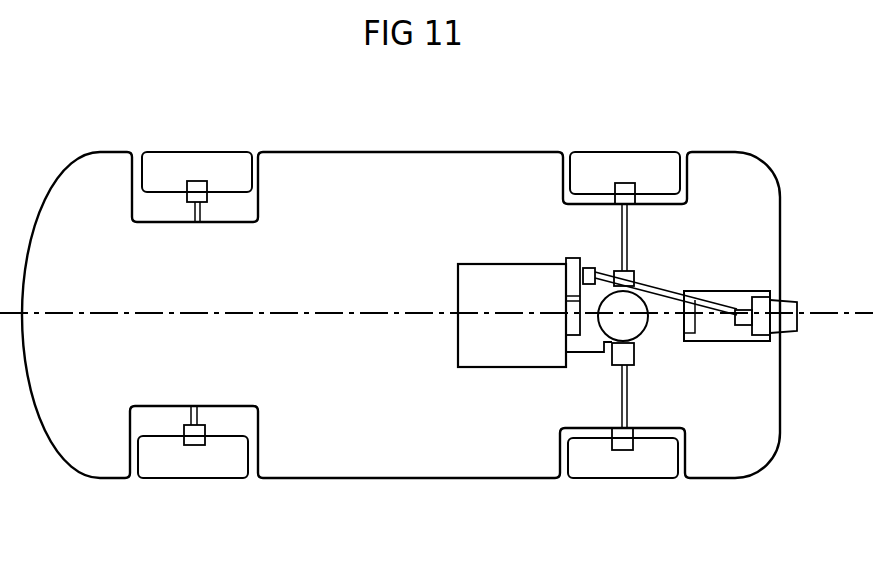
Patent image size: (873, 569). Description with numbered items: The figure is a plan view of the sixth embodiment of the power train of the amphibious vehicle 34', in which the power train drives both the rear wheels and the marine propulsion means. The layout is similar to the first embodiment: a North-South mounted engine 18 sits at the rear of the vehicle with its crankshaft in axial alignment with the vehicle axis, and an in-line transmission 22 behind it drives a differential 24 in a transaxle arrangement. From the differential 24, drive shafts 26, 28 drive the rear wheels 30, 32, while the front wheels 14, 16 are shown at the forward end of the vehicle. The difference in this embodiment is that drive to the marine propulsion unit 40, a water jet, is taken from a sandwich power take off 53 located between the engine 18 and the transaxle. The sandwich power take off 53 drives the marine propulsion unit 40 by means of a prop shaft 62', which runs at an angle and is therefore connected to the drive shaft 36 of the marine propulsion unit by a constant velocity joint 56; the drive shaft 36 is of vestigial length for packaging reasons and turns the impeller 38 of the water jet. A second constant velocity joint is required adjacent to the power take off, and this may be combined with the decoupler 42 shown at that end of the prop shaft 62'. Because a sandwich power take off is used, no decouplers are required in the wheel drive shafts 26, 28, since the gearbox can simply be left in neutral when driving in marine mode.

The front wheel 14 is at (170, 167).
The front wheel 16 is at (172, 468).
The engine 18 is at (500, 280).
The transmission 22 is at (658, 327).
The differential 24 is at (635, 307).
The drive shaft 26 is at (623, 227).
The drive shaft 28 is at (624, 395).
The rear wheel 30 is at (596, 172).
The rear wheel 32 is at (633, 460).
The amphibious vehicle 34' is at (436, 285).
The drive shaft 36 is at (752, 322).
The impeller 38 is at (763, 307).
The marine propulsion unit 40 is at (735, 297).
The decoupler 42 is at (590, 272).
The sandwich power take off 53 is at (560, 255).
The constant velocity joint 56 is at (748, 337).
The prop shaft 62' is at (701, 203).